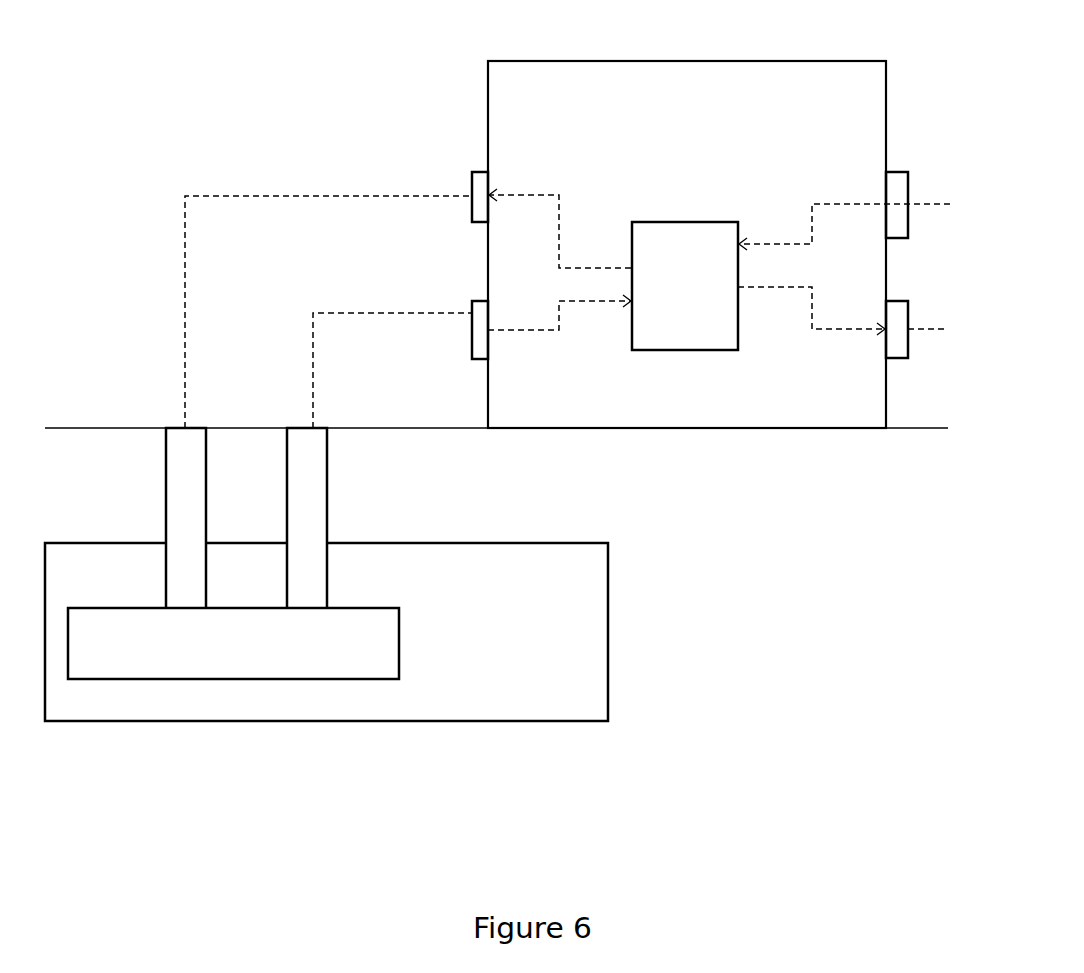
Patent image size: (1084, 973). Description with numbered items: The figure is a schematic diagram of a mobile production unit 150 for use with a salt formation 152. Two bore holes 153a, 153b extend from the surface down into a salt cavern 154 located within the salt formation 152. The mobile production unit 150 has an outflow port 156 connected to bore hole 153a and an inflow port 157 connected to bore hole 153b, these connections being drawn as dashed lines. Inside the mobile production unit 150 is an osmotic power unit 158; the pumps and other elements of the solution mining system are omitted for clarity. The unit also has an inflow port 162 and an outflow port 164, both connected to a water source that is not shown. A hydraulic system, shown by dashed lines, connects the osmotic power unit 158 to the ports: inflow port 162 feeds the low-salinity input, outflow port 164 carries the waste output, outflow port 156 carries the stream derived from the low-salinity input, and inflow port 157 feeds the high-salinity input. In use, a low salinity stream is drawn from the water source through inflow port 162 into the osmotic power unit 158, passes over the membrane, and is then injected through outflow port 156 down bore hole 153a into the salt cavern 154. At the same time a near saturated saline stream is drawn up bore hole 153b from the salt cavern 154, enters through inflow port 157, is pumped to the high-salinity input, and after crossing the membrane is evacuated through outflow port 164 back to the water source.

The mobile production unit 150 is at (562, 125).
The salt formation 152 is at (558, 587).
The bore hole 153a is at (182, 522).
The bore hole 153b is at (308, 533).
The salt cavern 154 is at (340, 662).
The outflow port 156 is at (482, 197).
The inflow port 157 is at (480, 333).
The osmotic power unit 158 is at (698, 298).
The inflow port 162 is at (897, 190).
The outflow port 164 is at (900, 333).